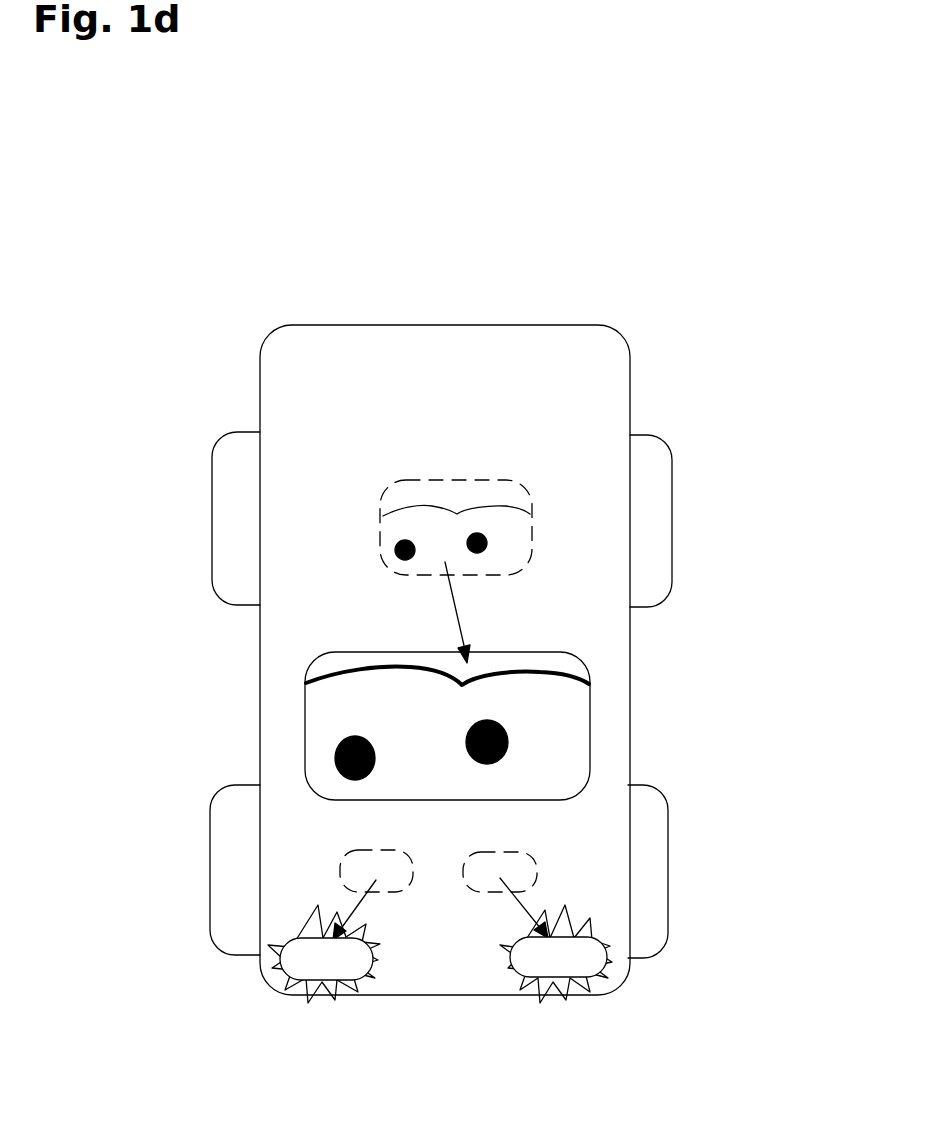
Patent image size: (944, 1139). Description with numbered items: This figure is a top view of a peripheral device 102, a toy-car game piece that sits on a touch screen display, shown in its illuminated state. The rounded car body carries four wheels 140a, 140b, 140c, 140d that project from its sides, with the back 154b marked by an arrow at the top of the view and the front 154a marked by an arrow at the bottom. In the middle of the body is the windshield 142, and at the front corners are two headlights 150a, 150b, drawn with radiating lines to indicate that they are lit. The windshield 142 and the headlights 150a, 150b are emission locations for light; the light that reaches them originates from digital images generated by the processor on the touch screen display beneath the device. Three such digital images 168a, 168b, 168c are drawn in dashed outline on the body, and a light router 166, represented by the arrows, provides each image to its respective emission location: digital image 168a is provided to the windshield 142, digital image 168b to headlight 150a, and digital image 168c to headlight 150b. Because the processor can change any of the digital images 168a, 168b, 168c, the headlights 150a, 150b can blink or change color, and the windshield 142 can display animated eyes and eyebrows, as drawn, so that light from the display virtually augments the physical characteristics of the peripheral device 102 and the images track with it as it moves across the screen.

The peripheral device 102 is at (778, 74).
The wheel 140a is at (225, 523).
The wheel 140b is at (220, 886).
The wheel 140c is at (652, 890).
The wheel 140d is at (655, 545).
The windshield 142 is at (574, 713).
The headlight 150a is at (283, 960).
The headlight 150b is at (510, 952).
The front 154a is at (434, 1036).
The back 154b is at (439, 290).
The light router 166 is at (457, 610).
The digital image 168a is at (490, 483).
The digital image 168b is at (414, 870).
The digital image 168c is at (540, 872).